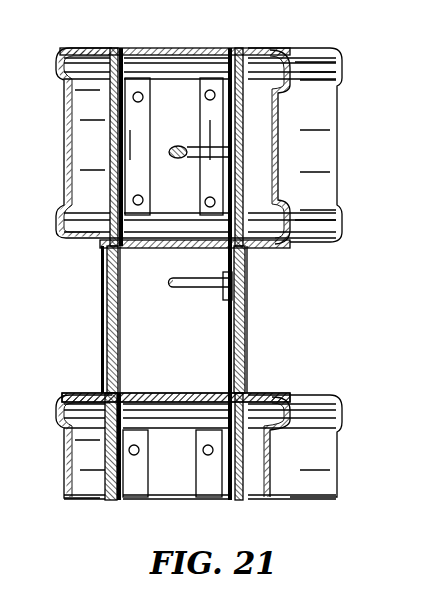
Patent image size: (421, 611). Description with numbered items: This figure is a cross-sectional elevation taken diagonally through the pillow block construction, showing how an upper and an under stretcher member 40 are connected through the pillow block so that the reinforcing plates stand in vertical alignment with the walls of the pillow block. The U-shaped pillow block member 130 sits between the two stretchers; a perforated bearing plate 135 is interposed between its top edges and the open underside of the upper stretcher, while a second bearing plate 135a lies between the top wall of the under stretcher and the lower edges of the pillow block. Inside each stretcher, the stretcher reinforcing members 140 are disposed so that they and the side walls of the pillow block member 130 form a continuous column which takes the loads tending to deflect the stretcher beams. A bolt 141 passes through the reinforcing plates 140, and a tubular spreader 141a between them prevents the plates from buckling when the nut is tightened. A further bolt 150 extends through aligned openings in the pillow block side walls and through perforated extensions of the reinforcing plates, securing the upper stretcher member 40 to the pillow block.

The stretcher member 40 is at (318, 112).
The stretcher reinforcing member 140 is at (110, 144).
The bolt 141 is at (176, 146).
The tubular spreader 141a is at (192, 145).
The bearing plate 135 is at (274, 249).
The bearing plate 135a is at (260, 392).
The pillow block member 130 is at (115, 287).
The bolt 150 is at (206, 290).